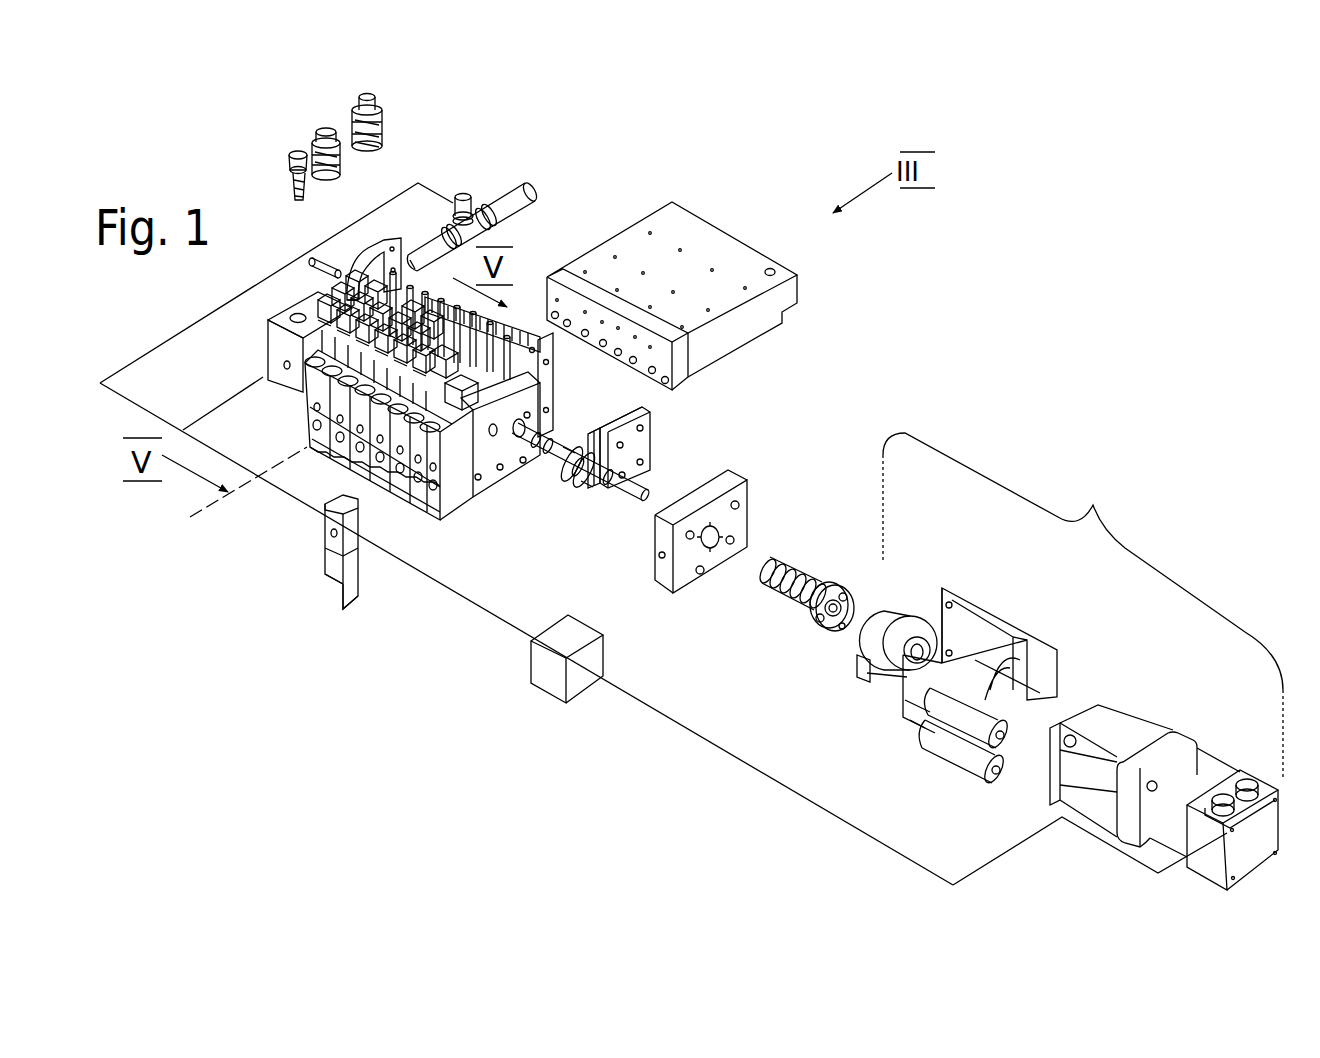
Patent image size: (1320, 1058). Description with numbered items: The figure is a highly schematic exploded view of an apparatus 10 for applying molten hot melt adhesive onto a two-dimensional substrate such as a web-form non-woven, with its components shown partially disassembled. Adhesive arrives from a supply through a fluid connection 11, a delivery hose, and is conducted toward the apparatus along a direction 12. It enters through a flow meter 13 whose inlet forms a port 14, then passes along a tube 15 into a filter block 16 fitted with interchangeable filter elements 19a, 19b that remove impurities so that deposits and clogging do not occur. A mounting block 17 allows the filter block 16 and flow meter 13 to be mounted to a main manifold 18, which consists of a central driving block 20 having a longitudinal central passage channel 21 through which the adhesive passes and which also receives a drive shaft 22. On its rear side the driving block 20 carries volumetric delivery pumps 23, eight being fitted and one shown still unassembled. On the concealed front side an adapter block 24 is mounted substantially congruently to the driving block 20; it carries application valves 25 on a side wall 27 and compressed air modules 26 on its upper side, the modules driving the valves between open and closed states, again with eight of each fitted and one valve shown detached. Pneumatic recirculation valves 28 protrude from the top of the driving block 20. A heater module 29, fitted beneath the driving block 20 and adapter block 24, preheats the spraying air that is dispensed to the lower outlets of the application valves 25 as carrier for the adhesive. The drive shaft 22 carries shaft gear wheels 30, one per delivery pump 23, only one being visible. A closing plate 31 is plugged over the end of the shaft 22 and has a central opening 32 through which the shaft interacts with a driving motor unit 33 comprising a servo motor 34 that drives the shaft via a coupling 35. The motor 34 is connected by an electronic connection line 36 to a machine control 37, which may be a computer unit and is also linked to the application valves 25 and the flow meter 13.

The apparatus 10 is at (663, 534).
The fluid connection 11 is at (510, 200).
The direction 12 is at (538, 187).
The flow meter 13 is at (471, 230).
The port 14 is at (470, 222).
The tube 15 is at (428, 253).
The filter block 16 is at (347, 252).
The mounting block 17 is at (278, 335).
The main manifold 18 is at (307, 477).
The filter element 19a is at (366, 97).
The filter element 19b is at (327, 132).
The central driving block 20 is at (505, 447).
The central passage channel 21 is at (533, 457).
The drive shaft 22 is at (652, 450).
The volumetric delivery pump 23 is at (618, 410).
The adapter block 24 is at (483, 500).
The application valve 25 is at (323, 565).
The compressed air module 26 is at (450, 478).
The side wall 27 is at (450, 425).
The pneumatic recirculation valve 28 is at (540, 342).
The heater module 29 is at (715, 245).
The shaft gear wheel 30 is at (580, 482).
The closing plate 31 is at (728, 531).
The central opening 32 is at (712, 540).
The driving motor unit 33 is at (1020, 609).
The servo motor 34 is at (1122, 732).
The coupling 35 is at (903, 610).
The electronic connection line 36 is at (798, 796).
The machine control 37 is at (545, 674).